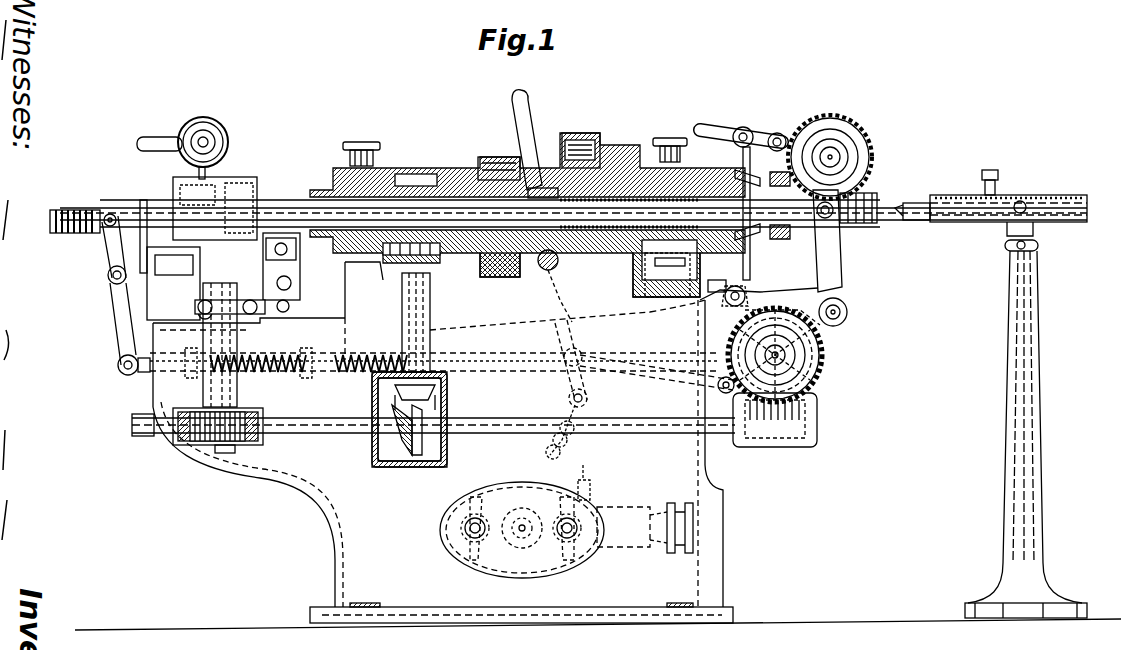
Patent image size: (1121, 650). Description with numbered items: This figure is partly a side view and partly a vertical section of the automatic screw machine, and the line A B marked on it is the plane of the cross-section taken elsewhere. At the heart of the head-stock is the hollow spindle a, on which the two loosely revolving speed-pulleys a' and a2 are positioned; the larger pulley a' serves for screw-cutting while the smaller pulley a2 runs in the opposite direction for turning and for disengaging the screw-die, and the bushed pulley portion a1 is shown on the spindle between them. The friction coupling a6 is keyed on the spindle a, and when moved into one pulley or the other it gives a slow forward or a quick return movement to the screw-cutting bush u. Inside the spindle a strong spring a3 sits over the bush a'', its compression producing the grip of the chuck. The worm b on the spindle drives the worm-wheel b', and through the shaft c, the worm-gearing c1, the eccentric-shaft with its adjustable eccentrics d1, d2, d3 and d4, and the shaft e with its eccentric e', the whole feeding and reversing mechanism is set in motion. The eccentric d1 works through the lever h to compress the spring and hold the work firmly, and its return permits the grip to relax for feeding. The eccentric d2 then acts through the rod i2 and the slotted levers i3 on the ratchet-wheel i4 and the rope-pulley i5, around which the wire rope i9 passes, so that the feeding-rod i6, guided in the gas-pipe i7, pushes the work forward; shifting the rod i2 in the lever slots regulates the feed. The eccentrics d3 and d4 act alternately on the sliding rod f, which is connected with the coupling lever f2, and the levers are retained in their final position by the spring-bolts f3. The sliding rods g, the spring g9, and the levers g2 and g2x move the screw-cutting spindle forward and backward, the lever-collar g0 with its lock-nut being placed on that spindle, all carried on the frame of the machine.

The section line end A is at (415, 158).
The section line end B is at (420, 463).
The hollow spindle a is at (573, 213).
The larger speed-pulley a' is at (411, 249).
The bush a'' is at (480, 270).
The upper casing block a1 is at (591, 142).
The smaller speed-pulley a2 is at (489, 160).
The strong spring a3 is at (666, 275).
The friction coupling a6 is at (540, 190).
The worm b is at (393, 150).
The worm-wheel b' is at (409, 370).
The shaft c is at (433, 425).
The worm-gearing c1 is at (213, 445).
The eccentric d1 is at (805, 350).
The eccentric d2 is at (732, 306).
The eccentric d3 is at (720, 393).
The eccentric d4 is at (810, 403).
The shaft e is at (233, 467).
The eccentric e' is at (220, 339).
The sliding rod f is at (648, 372).
The coupling lever f2 is at (542, 286).
The spring-bolts f3 is at (569, 432).
The sliding rods g is at (528, 362).
The lever-collar g0 is at (110, 214).
The lever g2 is at (112, 295).
The lever g2x is at (110, 252).
The spring g9 is at (286, 372).
The lever h is at (797, 247).
The rod i2 is at (755, 213).
The levers i3 is at (743, 122).
The ratchet-wheel i4 is at (838, 157).
The rope-pulley i5 is at (982, 185).
The feeding-rod i6 is at (912, 223).
The gas-pipe i7 is at (1087, 208).
The wire rope i9 is at (877, 196).
The screw-cutting bush u is at (75, 208).